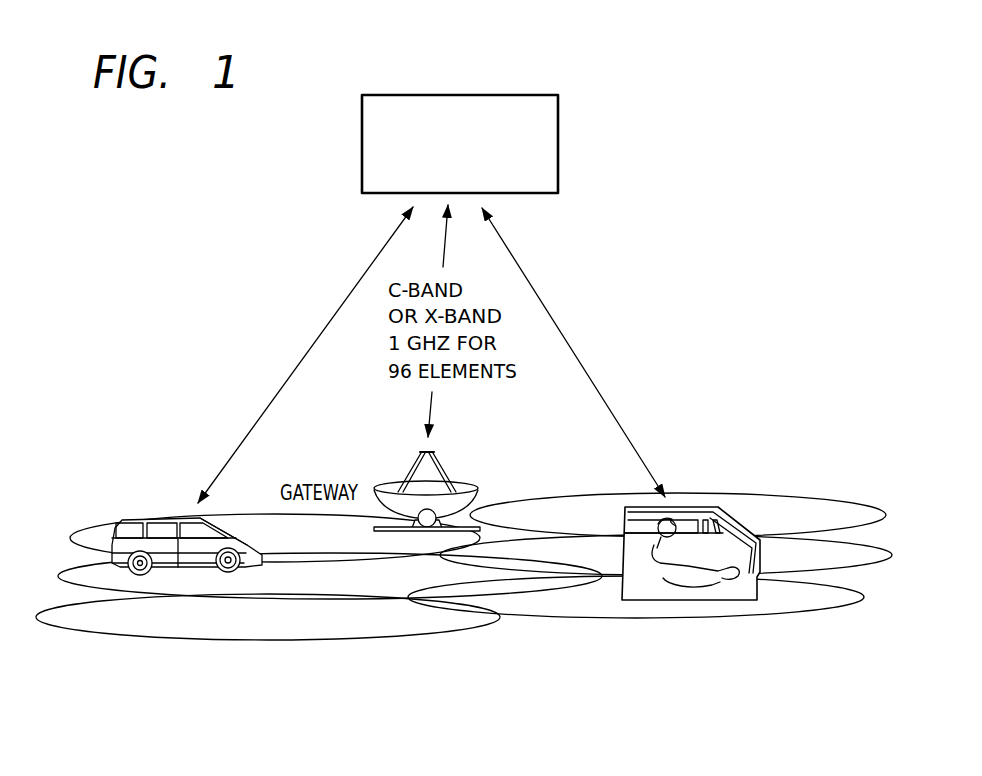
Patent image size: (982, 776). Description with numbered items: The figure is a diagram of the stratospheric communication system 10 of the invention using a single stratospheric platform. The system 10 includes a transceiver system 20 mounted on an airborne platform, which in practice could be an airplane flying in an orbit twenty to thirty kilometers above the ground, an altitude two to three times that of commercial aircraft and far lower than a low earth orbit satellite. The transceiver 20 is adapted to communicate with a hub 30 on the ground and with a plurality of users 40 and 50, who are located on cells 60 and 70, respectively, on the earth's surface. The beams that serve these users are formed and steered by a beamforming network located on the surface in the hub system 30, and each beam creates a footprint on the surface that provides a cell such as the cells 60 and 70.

The stratospheric communication system 10 is at (697, 302).
The transceiver system 20 is at (558, 157).
The hub 30 is at (445, 470).
The user 40 is at (158, 518).
The user 50 is at (743, 517).
The cell 60 is at (83, 573).
The cell 70 is at (782, 615).